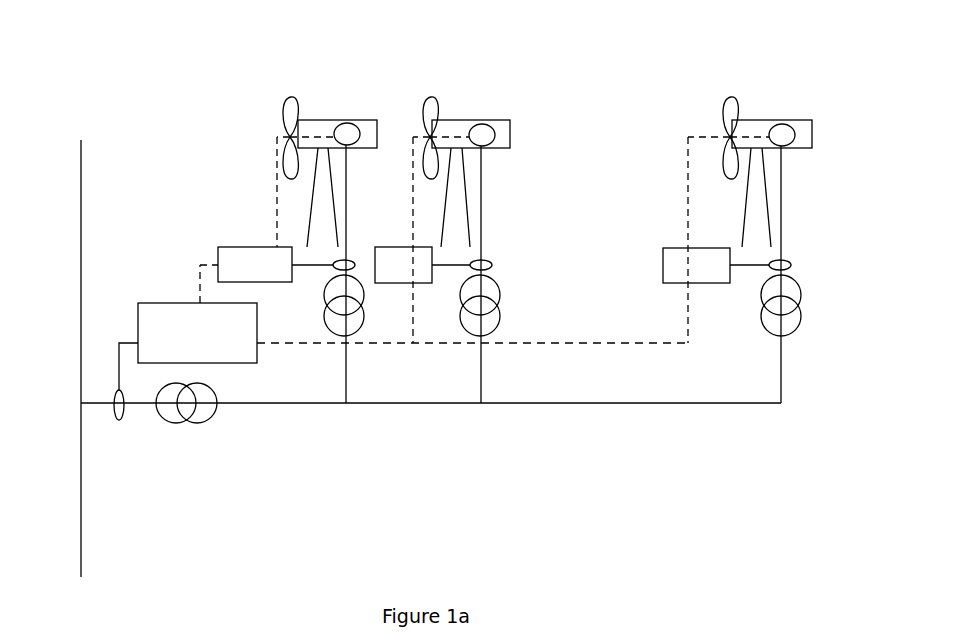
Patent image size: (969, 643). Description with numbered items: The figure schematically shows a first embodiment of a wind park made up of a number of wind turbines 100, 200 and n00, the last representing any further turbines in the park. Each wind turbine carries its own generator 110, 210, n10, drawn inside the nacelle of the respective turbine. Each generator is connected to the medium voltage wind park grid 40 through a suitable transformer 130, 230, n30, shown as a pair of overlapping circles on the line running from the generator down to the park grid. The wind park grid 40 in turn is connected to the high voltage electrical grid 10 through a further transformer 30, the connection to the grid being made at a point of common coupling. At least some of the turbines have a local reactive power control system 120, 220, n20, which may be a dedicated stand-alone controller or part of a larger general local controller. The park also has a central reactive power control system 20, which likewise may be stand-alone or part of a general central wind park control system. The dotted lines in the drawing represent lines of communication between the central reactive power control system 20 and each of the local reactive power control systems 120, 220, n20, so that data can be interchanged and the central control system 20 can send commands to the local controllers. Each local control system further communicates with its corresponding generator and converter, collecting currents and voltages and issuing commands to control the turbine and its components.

The electrical grid 10 is at (81, 167).
The central reactive power control system 20 is at (401, 342).
The transformer 30 is at (186, 418).
The medium voltage wind park grid 40 is at (588, 412).
The wind turbine 100 is at (291, 92).
The generator 110 is at (347, 123).
The local reactive power control system 120 is at (286, 264).
The transformer 130 is at (323, 274).
The wind turbine 200 is at (433, 88).
The generator 210 is at (484, 132).
The local reactive power control system 220 is at (433, 265).
The transformer 230 is at (504, 274).
The wind turbine n00 is at (733, 88).
The generator n10 is at (783, 132).
The local reactive power control system n20 is at (727, 265).
The transformer n30 is at (767, 274).